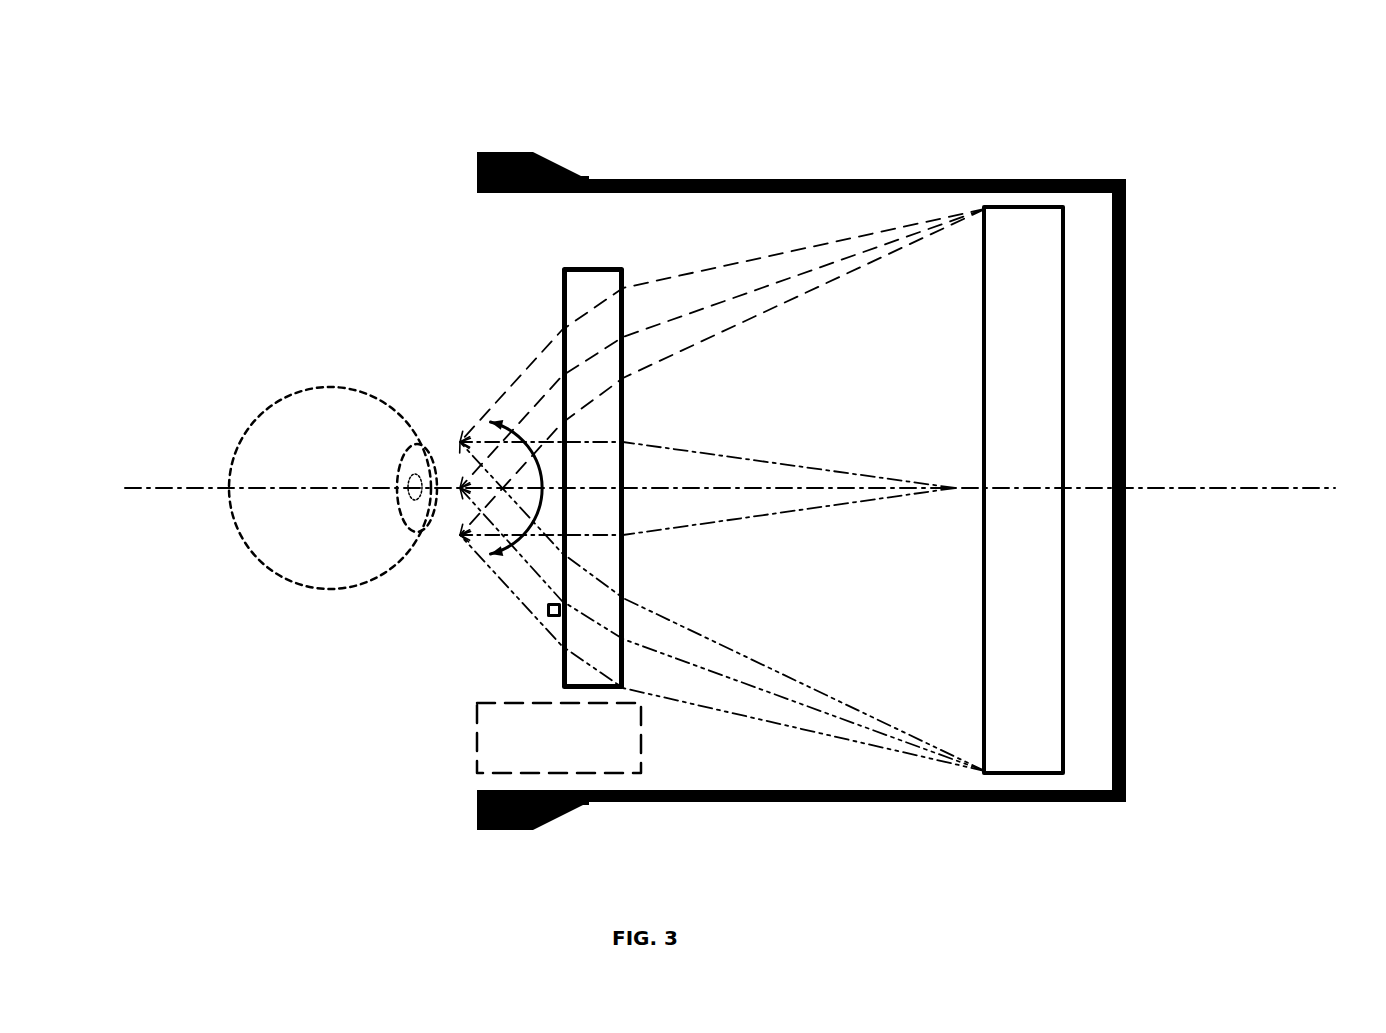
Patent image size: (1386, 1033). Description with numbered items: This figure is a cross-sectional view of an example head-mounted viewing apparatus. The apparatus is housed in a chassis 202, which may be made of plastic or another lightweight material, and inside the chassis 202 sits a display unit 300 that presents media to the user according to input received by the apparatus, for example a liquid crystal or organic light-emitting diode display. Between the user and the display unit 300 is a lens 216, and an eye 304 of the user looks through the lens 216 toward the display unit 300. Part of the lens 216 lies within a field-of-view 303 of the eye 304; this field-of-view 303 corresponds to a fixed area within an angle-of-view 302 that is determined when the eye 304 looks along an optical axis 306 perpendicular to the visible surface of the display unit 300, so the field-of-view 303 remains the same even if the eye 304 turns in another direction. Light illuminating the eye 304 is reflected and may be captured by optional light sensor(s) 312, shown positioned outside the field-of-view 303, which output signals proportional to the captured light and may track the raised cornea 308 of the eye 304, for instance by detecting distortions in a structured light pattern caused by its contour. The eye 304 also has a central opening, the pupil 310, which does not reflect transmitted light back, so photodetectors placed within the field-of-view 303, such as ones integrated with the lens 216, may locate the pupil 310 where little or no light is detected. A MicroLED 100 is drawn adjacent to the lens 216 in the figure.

The MicroLED 100 is at (547, 612).
The chassis 202 is at (1030, 170).
The lens 216 is at (590, 260).
The display unit 300 is at (1065, 244).
The angle-of-view 302 is at (496, 418).
The field-of-view 303 is at (525, 397).
The eye 304 is at (282, 397).
The optical axis 306 is at (746, 456).
The cornea 308 is at (428, 452).
The pupil 310 is at (412, 500).
The light sensor(s) 312 is at (477, 735).